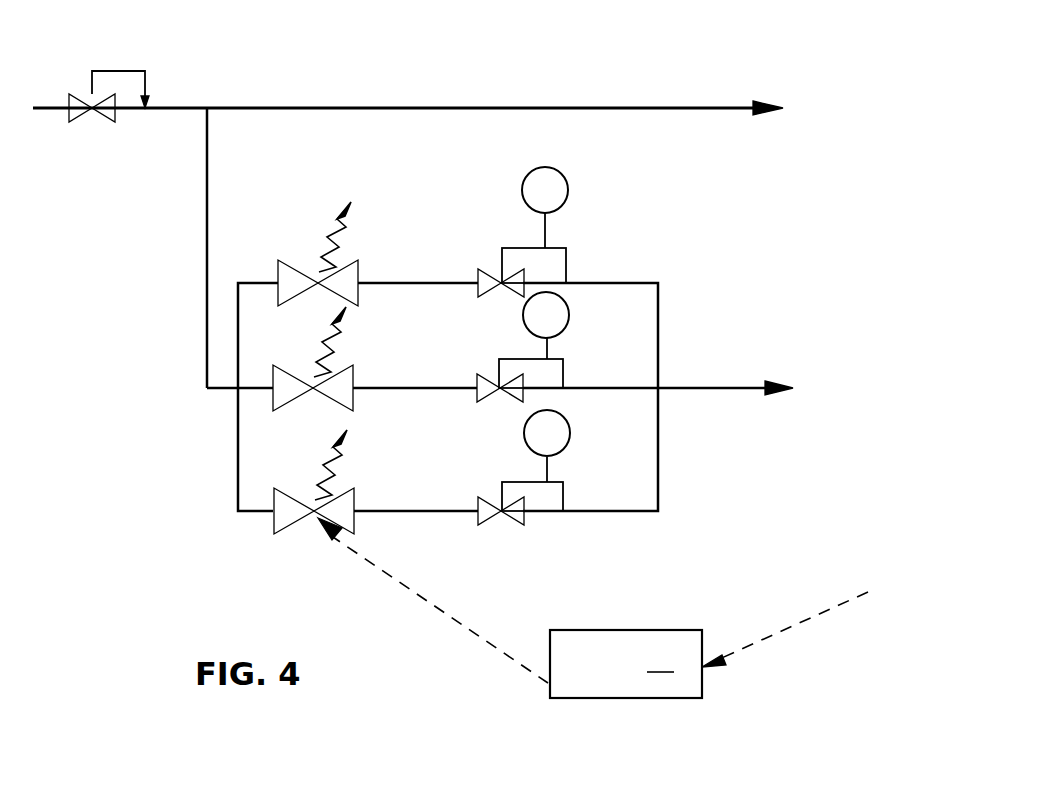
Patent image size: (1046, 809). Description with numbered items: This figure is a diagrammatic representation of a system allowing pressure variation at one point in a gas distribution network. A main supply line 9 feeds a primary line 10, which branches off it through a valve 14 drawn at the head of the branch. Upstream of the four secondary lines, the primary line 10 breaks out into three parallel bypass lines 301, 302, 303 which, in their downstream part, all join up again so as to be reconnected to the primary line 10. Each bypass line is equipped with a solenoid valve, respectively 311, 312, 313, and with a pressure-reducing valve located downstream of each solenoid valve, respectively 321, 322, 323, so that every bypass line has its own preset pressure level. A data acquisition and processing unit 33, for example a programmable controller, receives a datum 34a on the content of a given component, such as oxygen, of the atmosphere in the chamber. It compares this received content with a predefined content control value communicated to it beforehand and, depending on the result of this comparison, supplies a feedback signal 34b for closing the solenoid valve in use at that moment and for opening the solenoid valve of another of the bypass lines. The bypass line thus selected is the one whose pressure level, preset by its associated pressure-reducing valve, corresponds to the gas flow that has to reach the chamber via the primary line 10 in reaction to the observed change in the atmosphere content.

The main supply line 9 is at (300, 104).
The primary line 10 is at (226, 163).
The pressure reducing valve 14 is at (113, 70).
The solenoid valve 311 is at (303, 256).
The solenoid valve 312 is at (298, 368).
The solenoid valve 313 is at (297, 490).
The bypass line 301 is at (392, 266).
The bypass line 302 is at (375, 376).
The bypass line 303 is at (382, 498).
The pressure-reducing valve 321 is at (570, 241).
The pressure-reducing valve 322 is at (572, 350).
The pressure-reducing valve 323 is at (560, 472).
The data acquisition and processing unit 33 is at (626, 664).
The datum on the content of a given component 34a is at (820, 612).
The feedback signal 34b is at (438, 606).